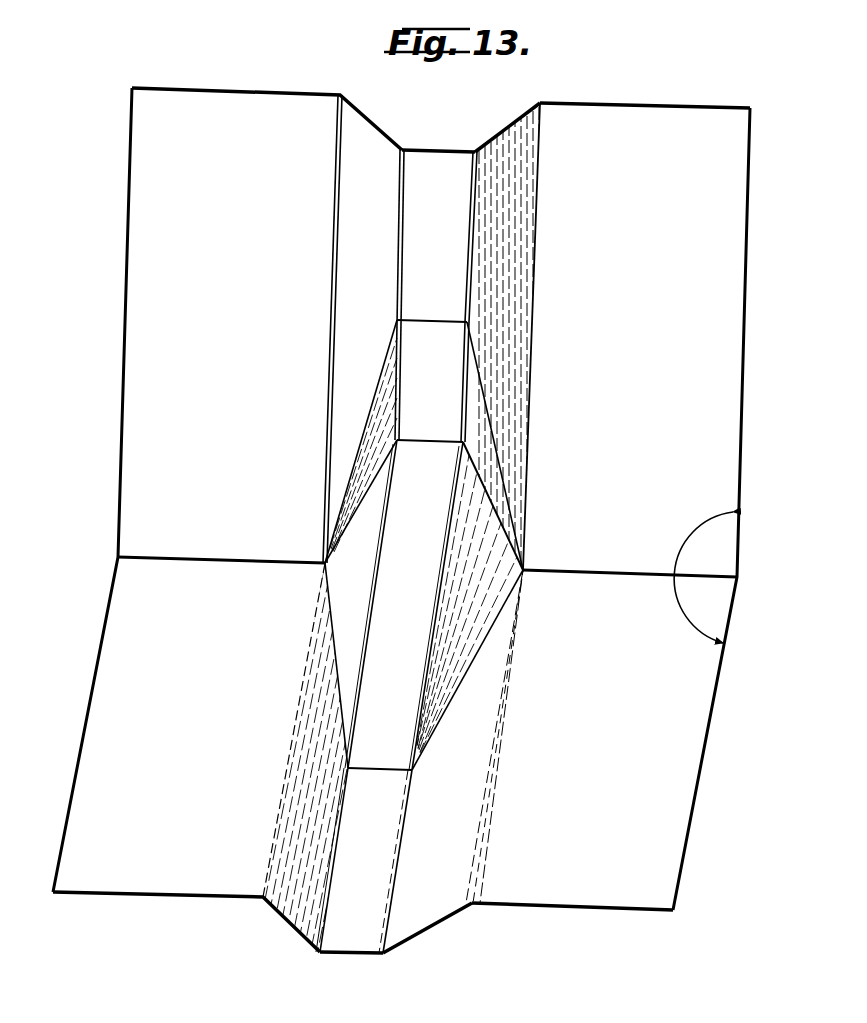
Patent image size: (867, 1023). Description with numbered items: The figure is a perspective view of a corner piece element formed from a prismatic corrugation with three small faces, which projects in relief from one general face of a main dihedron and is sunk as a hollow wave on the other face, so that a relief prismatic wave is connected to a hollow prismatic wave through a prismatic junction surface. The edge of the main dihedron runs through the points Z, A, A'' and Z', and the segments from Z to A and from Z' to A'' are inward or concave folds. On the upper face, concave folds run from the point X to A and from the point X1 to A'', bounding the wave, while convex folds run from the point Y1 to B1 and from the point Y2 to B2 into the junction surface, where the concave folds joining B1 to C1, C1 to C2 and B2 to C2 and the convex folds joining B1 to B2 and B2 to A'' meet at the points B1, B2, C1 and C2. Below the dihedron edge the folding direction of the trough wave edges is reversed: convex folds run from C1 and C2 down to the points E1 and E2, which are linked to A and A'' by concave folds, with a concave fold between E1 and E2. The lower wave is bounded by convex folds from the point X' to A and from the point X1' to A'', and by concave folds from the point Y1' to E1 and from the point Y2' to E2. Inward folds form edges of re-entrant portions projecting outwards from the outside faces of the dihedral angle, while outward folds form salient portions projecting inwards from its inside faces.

The fold line end point X is at (267, 314).
The fold line end point Y1 is at (435, 281).
The fold line end point Y2 is at (500, 337).
The fold line end point X1 is at (636, 323).
The fold line junction point B1 is at (396, 430).
The fold line junction point B2 is at (479, 429).
The fold line junction point C1 is at (394, 591).
The fold line junction point C2 is at (466, 603).
The fold line end point Z is at (94, 490).
The fold line vertex A is at (267, 747).
The fold line vertex A'' is at (574, 719).
The fold line end point Z' is at (711, 509).
The fold line junction point E1 is at (364, 860).
The fold line junction point E2 is at (412, 861).
The fold line end point X' is at (186, 922).
The fold line end point Y1' is at (345, 972).
The fold line end point Y2' is at (422, 947).
The fold line end point X1' is at (571, 922).